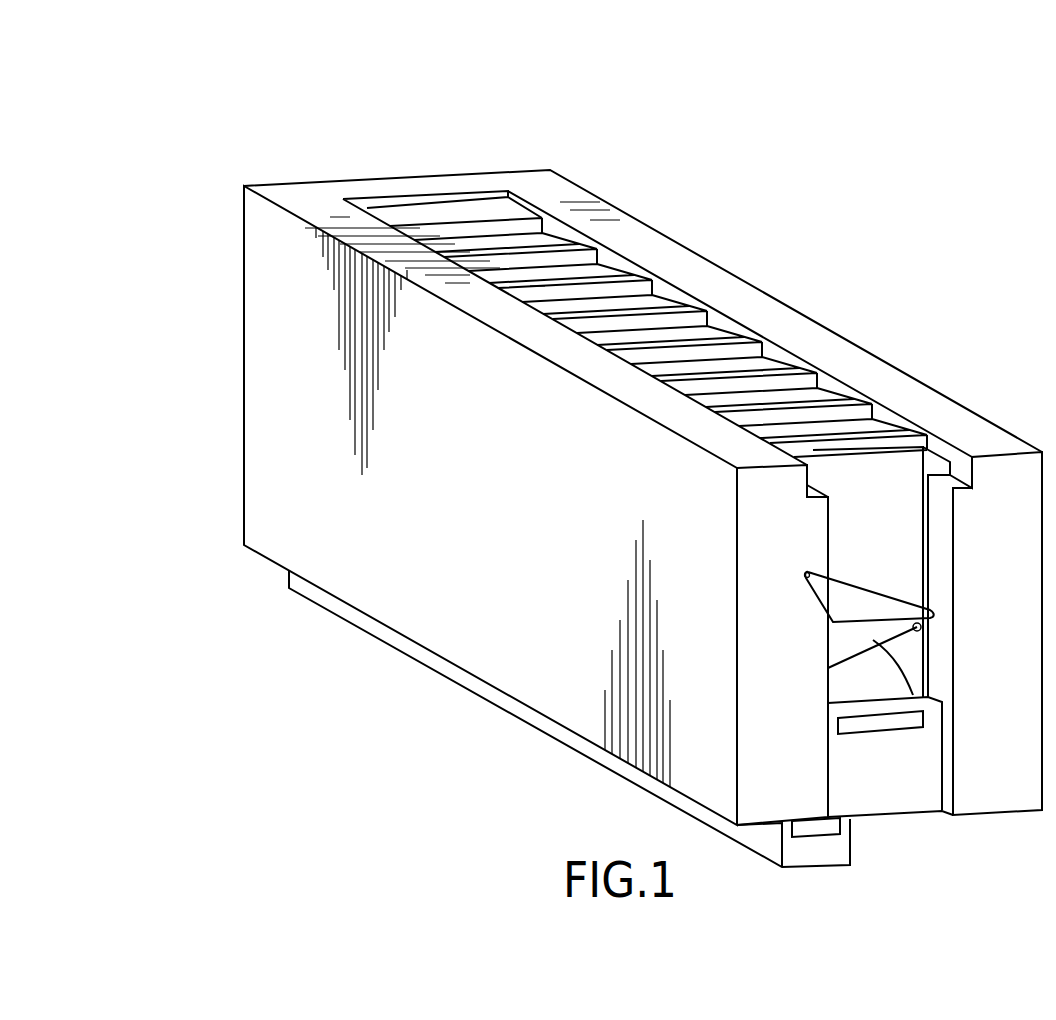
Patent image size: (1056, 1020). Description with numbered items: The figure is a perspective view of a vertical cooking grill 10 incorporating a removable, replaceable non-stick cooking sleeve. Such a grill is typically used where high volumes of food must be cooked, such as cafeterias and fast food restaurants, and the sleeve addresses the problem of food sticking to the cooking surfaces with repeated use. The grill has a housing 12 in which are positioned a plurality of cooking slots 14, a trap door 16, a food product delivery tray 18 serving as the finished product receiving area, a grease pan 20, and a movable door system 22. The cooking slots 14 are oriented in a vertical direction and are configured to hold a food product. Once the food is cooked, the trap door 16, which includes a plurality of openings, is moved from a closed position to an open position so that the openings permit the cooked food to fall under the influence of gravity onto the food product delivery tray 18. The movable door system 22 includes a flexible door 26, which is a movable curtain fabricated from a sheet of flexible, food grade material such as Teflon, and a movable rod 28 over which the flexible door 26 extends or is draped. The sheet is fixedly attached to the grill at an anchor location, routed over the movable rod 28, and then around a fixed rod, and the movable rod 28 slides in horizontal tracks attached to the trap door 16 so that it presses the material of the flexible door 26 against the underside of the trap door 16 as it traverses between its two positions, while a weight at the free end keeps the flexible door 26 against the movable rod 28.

The vertical cooking grill 10 is at (300, 108).
The housing 12 is at (282, 410).
The cooking slots 14 is at (730, 360).
The trap door 16 is at (922, 604).
The food product delivery tray 18 is at (848, 695).
The grease pan 20 is at (813, 850).
The movable door system 22 is at (812, 630).
The flexible door 26 is at (928, 697).
The movable rod 28 is at (921, 630).